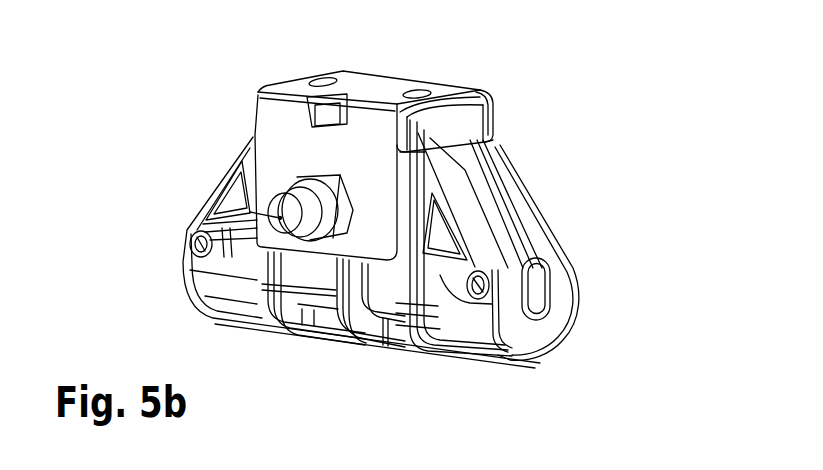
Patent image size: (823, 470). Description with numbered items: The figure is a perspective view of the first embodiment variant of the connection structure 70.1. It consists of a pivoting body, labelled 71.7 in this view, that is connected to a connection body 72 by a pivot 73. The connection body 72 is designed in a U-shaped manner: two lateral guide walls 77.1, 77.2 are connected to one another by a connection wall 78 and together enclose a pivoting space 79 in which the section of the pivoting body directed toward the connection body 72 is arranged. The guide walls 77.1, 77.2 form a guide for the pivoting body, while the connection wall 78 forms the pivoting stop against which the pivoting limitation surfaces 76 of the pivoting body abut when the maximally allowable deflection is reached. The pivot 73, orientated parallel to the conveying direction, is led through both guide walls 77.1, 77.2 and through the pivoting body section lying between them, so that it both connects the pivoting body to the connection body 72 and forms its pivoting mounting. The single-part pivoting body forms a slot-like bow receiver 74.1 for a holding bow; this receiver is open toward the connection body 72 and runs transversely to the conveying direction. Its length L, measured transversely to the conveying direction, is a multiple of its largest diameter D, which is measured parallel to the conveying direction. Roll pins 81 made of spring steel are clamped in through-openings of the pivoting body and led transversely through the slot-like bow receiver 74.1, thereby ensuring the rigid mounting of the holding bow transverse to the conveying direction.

The connection structure 70.1 is at (572, 239).
The arm 71.7 is at (525, 200).
The connection body 72 is at (395, 140).
The pivot 73 is at (213, 183).
The bow receiver 74.1 is at (535, 311).
The pivoting limitation surfaces 76 is at (483, 140).
The guide wall 77.1 is at (473, 120).
The guide wall 77.2 is at (303, 147).
The connection wall 78 is at (385, 87).
The pivoting space 79 is at (497, 127).
The roll pins 81 is at (187, 238).
The largest diameter of the bow receiver D is at (505, 306).
The length of the bow receiver L is at (213, 330).